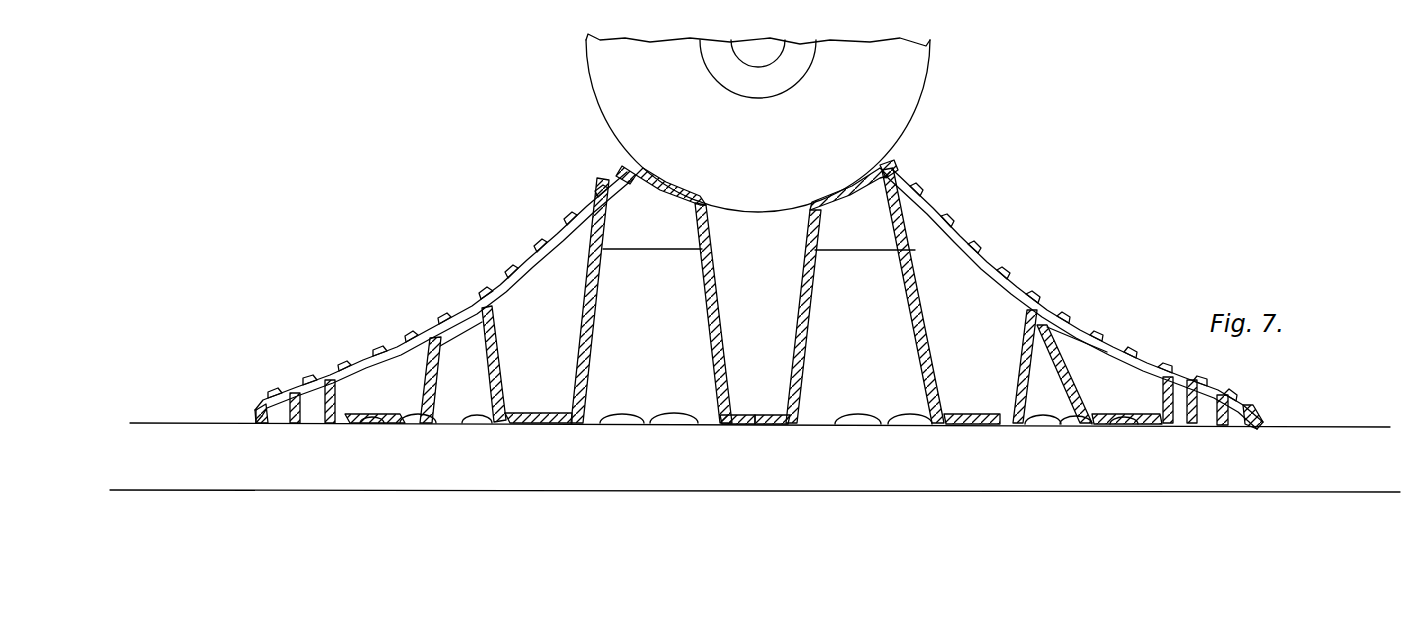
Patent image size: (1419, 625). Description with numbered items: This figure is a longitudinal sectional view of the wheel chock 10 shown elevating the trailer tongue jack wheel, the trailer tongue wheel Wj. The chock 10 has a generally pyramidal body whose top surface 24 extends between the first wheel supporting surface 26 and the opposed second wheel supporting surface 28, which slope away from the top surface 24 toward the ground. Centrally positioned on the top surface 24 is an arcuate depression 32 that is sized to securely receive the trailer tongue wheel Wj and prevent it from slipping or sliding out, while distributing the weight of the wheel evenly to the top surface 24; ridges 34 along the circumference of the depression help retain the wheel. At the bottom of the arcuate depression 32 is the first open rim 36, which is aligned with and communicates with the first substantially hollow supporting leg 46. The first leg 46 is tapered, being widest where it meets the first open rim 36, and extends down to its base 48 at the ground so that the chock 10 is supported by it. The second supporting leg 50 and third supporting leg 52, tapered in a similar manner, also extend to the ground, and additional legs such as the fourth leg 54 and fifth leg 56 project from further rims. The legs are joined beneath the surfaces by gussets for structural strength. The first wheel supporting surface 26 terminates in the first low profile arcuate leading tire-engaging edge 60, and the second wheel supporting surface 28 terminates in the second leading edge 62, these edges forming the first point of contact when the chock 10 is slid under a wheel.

The trailer tongue wheel Wj is at (903, 86).
The wheel chock 10 is at (1077, 192).
The top surface 24 is at (857, 183).
The first wheel supporting surface 26 is at (510, 275).
The second wheel supporting surface 28 is at (1000, 277).
The arcuate depression 32 is at (827, 192).
The ridges 34 is at (637, 167).
The first open rim 36 is at (735, 220).
The first supporting leg 46 is at (733, 427).
The base 48 is at (780, 427).
The second supporting leg 50 is at (550, 427).
The third supporting leg 52 is at (995, 427).
The fourth leg 54 is at (370, 427).
The fifth leg 56 is at (1145, 425).
The first leading tire-engaging edge 60 is at (257, 417).
The second leading tire-engaging edge 62 is at (1263, 420).